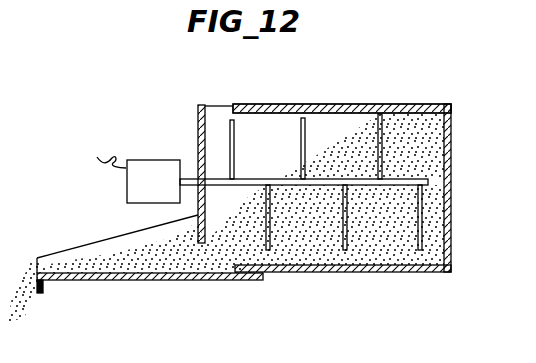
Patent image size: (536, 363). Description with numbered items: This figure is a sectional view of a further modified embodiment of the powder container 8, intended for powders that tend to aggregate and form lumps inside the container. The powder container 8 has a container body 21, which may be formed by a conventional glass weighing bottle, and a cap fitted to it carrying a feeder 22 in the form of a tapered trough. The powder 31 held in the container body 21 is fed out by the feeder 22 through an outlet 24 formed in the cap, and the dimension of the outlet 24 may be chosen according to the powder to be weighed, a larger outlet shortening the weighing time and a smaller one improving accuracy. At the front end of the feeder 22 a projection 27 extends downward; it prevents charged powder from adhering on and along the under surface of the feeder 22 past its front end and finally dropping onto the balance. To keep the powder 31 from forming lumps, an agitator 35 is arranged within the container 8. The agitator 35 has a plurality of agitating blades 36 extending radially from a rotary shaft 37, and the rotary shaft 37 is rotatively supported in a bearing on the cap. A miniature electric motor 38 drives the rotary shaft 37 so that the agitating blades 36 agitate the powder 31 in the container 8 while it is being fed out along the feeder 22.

The powder container 8 is at (367, 102).
The container body 21 is at (451, 193).
The feeder 22 is at (77, 247).
The outlet 24 is at (200, 253).
The projection 27 is at (43, 290).
The powder 31 is at (395, 246).
The agitator 35 is at (260, 166).
The agitating blades 36 is at (236, 140).
The rotary shaft 37 is at (217, 176).
The miniature electric motor 38 is at (138, 172).